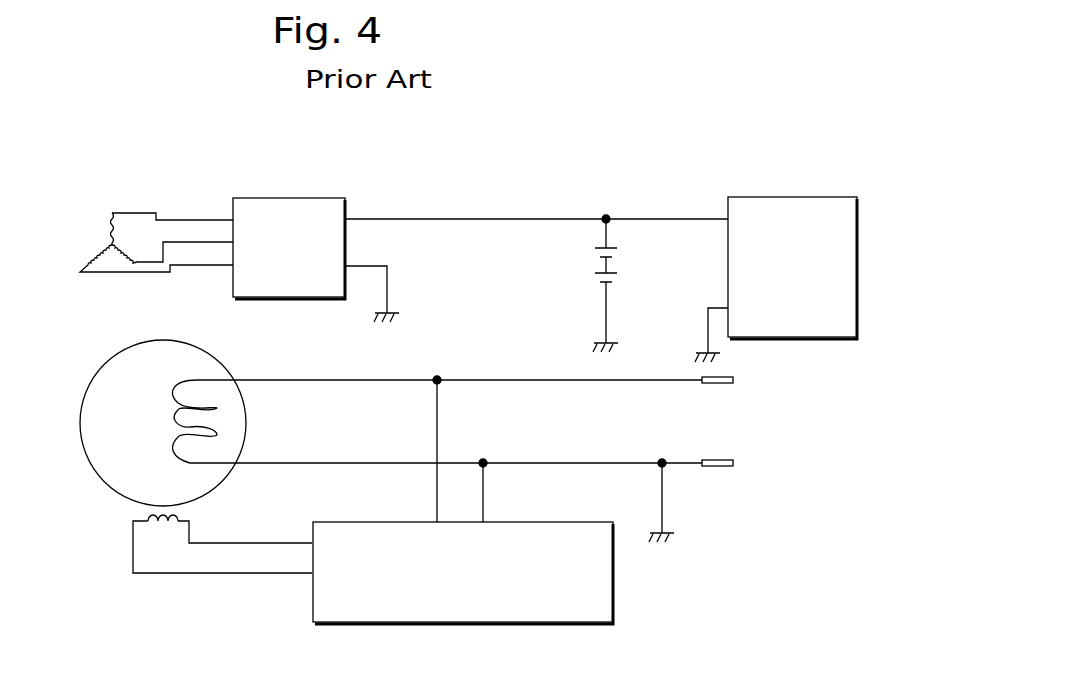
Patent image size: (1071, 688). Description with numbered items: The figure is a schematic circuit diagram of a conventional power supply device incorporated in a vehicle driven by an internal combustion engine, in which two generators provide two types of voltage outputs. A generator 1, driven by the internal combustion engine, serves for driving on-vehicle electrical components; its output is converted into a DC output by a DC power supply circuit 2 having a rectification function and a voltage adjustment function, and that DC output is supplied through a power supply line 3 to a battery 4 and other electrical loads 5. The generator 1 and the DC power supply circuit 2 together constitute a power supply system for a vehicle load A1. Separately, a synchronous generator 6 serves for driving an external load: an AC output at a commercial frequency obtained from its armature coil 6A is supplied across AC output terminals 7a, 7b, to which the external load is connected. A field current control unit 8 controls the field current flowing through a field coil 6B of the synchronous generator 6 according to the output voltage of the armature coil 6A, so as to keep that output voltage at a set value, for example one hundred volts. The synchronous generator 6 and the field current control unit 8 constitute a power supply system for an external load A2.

The generator 1 is at (161, 205).
The DC power supply circuit 2 is at (280, 197).
The power supply line 3 is at (396, 218).
The battery 4 is at (597, 268).
The electrical loads 5 is at (773, 196).
The synchronous generator 6 is at (219, 348).
The armature coil 6A is at (217, 409).
The field coil 6B is at (158, 527).
The AC output terminal 7a is at (735, 381).
The AC output terminal 7b is at (735, 462).
The field current control unit 8 is at (613, 575).
The power supply system for a vehicle load A1 is at (473, 210).
The power supply system for an external load A2 is at (469, 372).